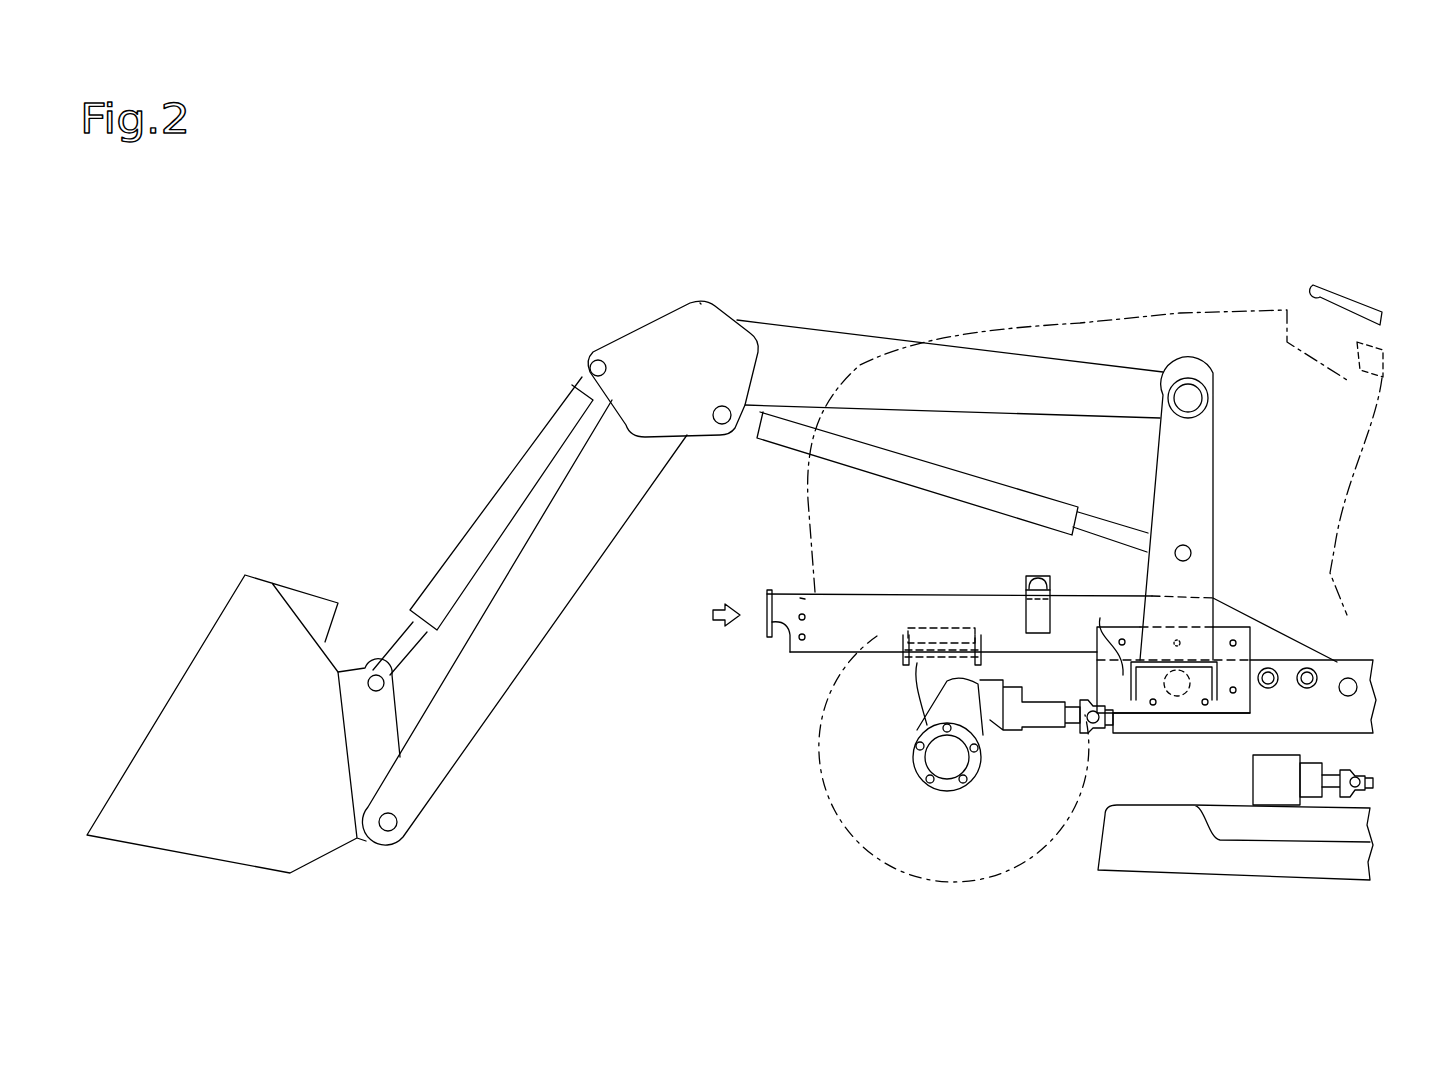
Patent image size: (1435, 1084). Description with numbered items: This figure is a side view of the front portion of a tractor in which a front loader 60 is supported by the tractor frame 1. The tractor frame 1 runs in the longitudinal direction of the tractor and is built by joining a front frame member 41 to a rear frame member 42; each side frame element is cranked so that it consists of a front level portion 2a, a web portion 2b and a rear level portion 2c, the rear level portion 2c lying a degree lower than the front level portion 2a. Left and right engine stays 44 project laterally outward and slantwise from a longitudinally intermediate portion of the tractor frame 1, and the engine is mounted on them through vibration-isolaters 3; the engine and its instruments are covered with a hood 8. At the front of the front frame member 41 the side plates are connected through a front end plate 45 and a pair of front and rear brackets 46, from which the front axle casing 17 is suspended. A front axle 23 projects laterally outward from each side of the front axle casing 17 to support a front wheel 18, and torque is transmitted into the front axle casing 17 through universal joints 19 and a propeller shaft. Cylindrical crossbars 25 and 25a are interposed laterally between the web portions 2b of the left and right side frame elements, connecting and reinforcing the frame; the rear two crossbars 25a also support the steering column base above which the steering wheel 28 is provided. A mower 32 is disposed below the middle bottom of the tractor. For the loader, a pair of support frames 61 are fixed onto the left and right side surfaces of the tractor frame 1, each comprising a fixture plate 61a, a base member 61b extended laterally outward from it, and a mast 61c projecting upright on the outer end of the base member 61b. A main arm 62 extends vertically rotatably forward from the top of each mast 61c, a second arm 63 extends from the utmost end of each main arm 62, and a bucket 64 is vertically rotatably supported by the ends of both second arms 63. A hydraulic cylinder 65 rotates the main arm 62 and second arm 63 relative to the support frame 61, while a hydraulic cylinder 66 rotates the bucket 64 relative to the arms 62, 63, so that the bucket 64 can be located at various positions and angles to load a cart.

The tractor frame 1 is at (717, 616).
The front level portion 2a is at (826, 674).
The web portion 2b is at (1166, 726).
The rear level portion 2c is at (1360, 749).
The vibration-isolater 3 is at (1023, 582).
The hood 8 is at (1181, 312).
The front axle casing 17 is at (1003, 735).
The front wheel 18 is at (855, 845).
The universal joint 19 is at (1100, 733).
The front axle 23 is at (935, 757).
The crossbar 25 is at (1190, 700).
The crossbar 25a is at (1307, 668).
The steering wheel 28 is at (1338, 283).
The mower 32 is at (1120, 855).
The front frame member 41 is at (805, 598).
The rear frame member 42 is at (1316, 728).
The engine stay 44 is at (1027, 617).
The front end plate 45 is at (766, 625).
The bracket 46 is at (918, 673).
The front loader 60 is at (588, 290).
The support frame 61 is at (1225, 497).
The fixture plate 61a is at (1225, 630).
The base member 61b is at (1124, 618).
The mast 61c is at (1208, 430).
The main arm 62 is at (853, 340).
The second arm 63 is at (527, 643).
The bucket 64 is at (272, 588).
The hydraulic cylinder 65 is at (903, 480).
The hydraulic cylinder 66 is at (498, 503).